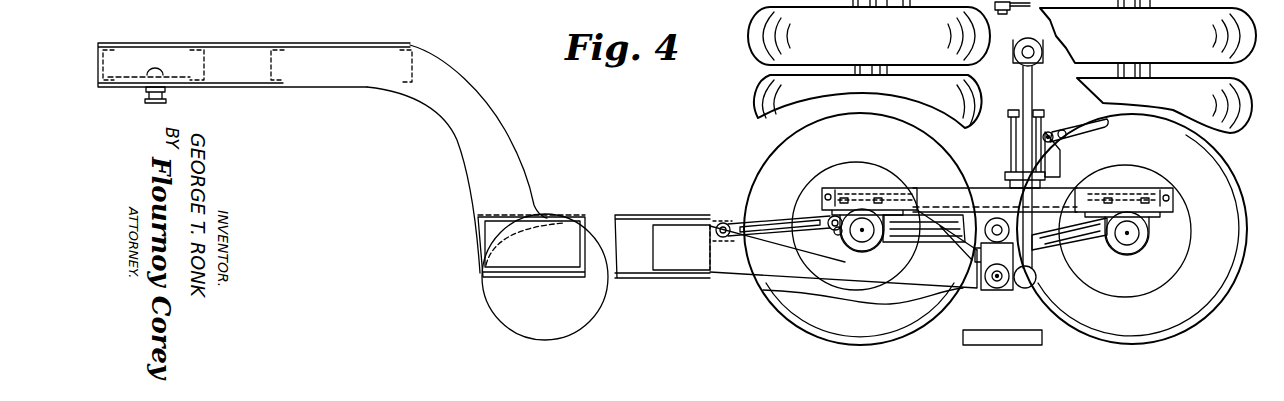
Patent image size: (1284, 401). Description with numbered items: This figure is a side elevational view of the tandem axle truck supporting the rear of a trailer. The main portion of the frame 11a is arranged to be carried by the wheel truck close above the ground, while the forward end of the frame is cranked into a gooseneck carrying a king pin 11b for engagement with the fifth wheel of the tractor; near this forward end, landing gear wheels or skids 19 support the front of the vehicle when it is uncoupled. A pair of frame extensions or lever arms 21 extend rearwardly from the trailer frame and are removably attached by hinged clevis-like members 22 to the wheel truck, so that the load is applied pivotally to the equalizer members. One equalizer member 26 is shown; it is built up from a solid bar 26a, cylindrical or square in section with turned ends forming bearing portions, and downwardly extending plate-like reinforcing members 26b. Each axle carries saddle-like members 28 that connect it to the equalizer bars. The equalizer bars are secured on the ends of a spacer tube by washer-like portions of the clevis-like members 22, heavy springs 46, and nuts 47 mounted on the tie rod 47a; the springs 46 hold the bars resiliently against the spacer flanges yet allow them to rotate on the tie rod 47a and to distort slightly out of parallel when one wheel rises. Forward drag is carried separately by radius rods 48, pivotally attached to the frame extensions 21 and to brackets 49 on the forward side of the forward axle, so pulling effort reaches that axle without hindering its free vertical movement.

The main portion of the frame 11a is at (509, 0).
The king pin 11b is at (162, 96).
The landing gear wheels or skids 19 is at (507, 302).
The frame extensions or lever arms 21 is at (753, 267).
The hinged clevis-like members 22 is at (983, 267).
The equalizer member 26 is at (1052, 200).
The solid bar 26a is at (992, 200).
The plate-like reinforcing members 26b is at (957, 222).
The saddle-like members 28 is at (870, 210).
The heavy springs 46 is at (1029, 5).
The nuts 47 is at (1012, 5).
The tie rod 47a is at (1002, 13).
The radius rods 48 is at (767, 217).
The brackets 49 is at (837, 228).